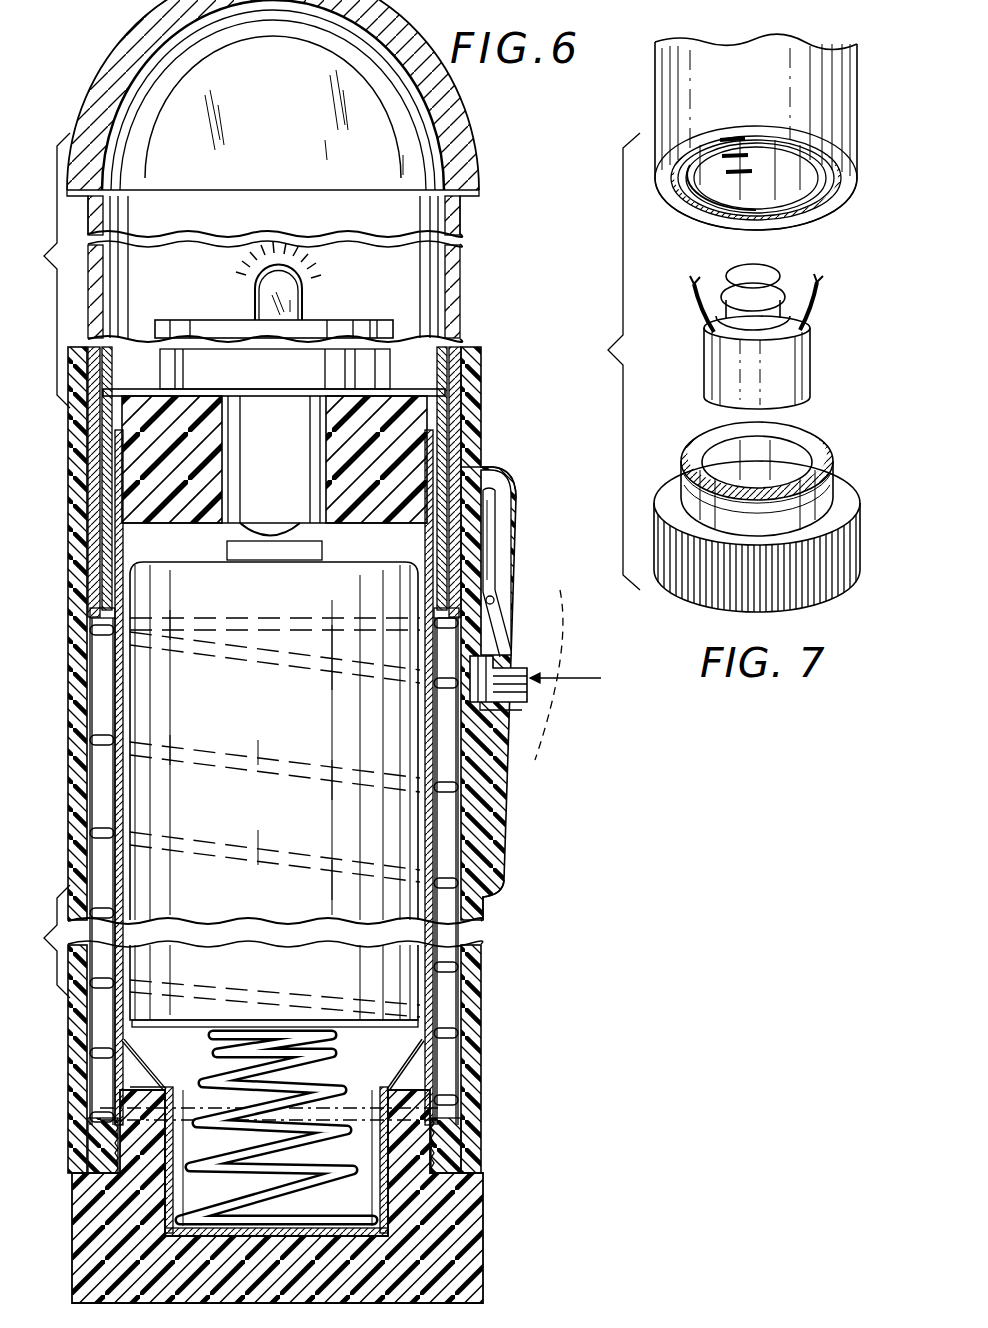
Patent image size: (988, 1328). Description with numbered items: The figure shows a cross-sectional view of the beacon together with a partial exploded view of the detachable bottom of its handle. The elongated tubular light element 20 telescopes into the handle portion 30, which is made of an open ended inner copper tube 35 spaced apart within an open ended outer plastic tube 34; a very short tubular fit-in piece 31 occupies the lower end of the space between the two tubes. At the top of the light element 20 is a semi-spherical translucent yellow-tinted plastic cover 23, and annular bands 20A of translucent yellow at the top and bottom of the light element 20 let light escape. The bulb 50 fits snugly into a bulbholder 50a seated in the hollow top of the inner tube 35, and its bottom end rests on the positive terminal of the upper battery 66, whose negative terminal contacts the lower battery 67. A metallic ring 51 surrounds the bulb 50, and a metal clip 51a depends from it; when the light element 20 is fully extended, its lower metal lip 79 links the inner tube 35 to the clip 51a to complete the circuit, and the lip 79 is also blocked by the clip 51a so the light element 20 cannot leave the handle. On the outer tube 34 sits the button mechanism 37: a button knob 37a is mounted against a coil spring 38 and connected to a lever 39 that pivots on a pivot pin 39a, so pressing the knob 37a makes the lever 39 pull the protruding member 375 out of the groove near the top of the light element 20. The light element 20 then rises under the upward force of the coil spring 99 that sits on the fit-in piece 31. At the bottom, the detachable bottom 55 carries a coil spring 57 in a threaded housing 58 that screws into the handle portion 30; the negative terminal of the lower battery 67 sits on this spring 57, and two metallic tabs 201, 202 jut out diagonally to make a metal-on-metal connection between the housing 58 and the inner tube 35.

In FIG. 6, the translucent cover 23 is at (156, 50).
In FIG. 6, the annular bands 20A is at (125, 205).
In FIG. 6, the light element 20 is at (460, 232).
In FIG. 6, the bulb 50 is at (300, 266).
In FIG. 6, the metallic ring 51 is at (186, 393).
In FIG. 6, the metal clip 51a is at (95, 432).
In FIG. 6, the bulbholder 50a is at (410, 416).
In FIG. 6, the protruding member 375 is at (480, 468).
In FIG. 6, the lever 39 is at (510, 518).
In FIG. 6, the button mechanism 37 is at (528, 548).
In FIG. 6, the pivot pin 39a is at (496, 600).
In FIG. 6, the coil spring 38 is at (528, 668).
In FIG. 6, the button knob 37a is at (530, 680).
In FIG. 6, the lower metal lip 79 is at (88, 632).
In FIG. 6, the outer tube 34 is at (78, 645).
In FIG. 7, the outer tube 34 is at (660, 90).
In FIG. 6, the coil spring 99 is at (82, 757).
In FIG. 6, the upper battery 66 is at (478, 897).
In FIG. 6, the lower battery 67 is at (418, 982).
In FIG. 6, the inner tube 35 is at (432, 1045).
In FIG. 7, the inner tube 35 is at (818, 212).
In FIG. 6, the handle portion 30 is at (492, 1108).
In FIG. 7, the handle portion 30 is at (648, 122).
In FIG. 6, the coil spring 57 is at (392, 1135).
In FIG. 7, the coil spring 57 is at (770, 275).
In FIG. 6, the fit-in piece 31 is at (88, 1160).
In FIG. 7, the fit-in piece 31 is at (670, 204).
In FIG. 6, the detachable bottom 55 is at (462, 1250).
In FIG. 7, the detachable bottom 55 is at (812, 585).
In FIG. 7, the metallic tab 201 is at (695, 290).
In FIG. 7, the metallic tab 202 is at (818, 292).
In FIG. 7, the housing 58 is at (800, 364).